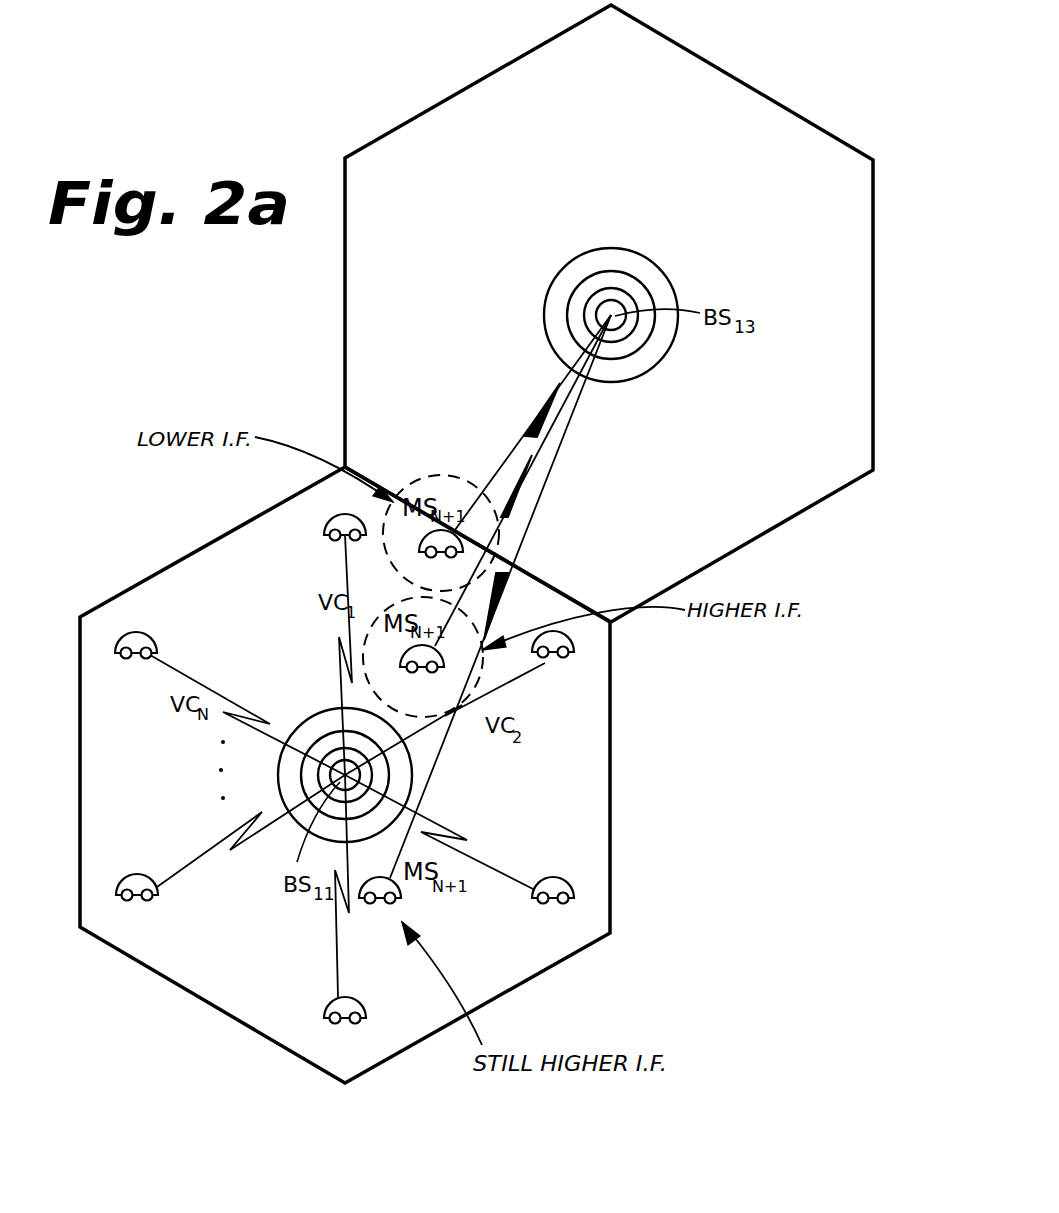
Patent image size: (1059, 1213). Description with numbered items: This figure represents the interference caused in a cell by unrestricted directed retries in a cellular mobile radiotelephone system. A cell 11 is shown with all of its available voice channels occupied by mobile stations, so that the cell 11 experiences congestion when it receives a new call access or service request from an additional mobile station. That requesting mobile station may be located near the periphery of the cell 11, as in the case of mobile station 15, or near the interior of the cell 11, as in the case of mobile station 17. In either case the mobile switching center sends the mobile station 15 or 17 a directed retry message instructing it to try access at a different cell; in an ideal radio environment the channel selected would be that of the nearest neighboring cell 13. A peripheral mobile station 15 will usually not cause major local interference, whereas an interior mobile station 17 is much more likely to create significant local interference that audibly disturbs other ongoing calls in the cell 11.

The cell 11 is at (80, 776).
The neighboring cell 13 is at (745, 82).
The mobile station 15 is at (442, 557).
The mobile station 17 is at (422, 673).